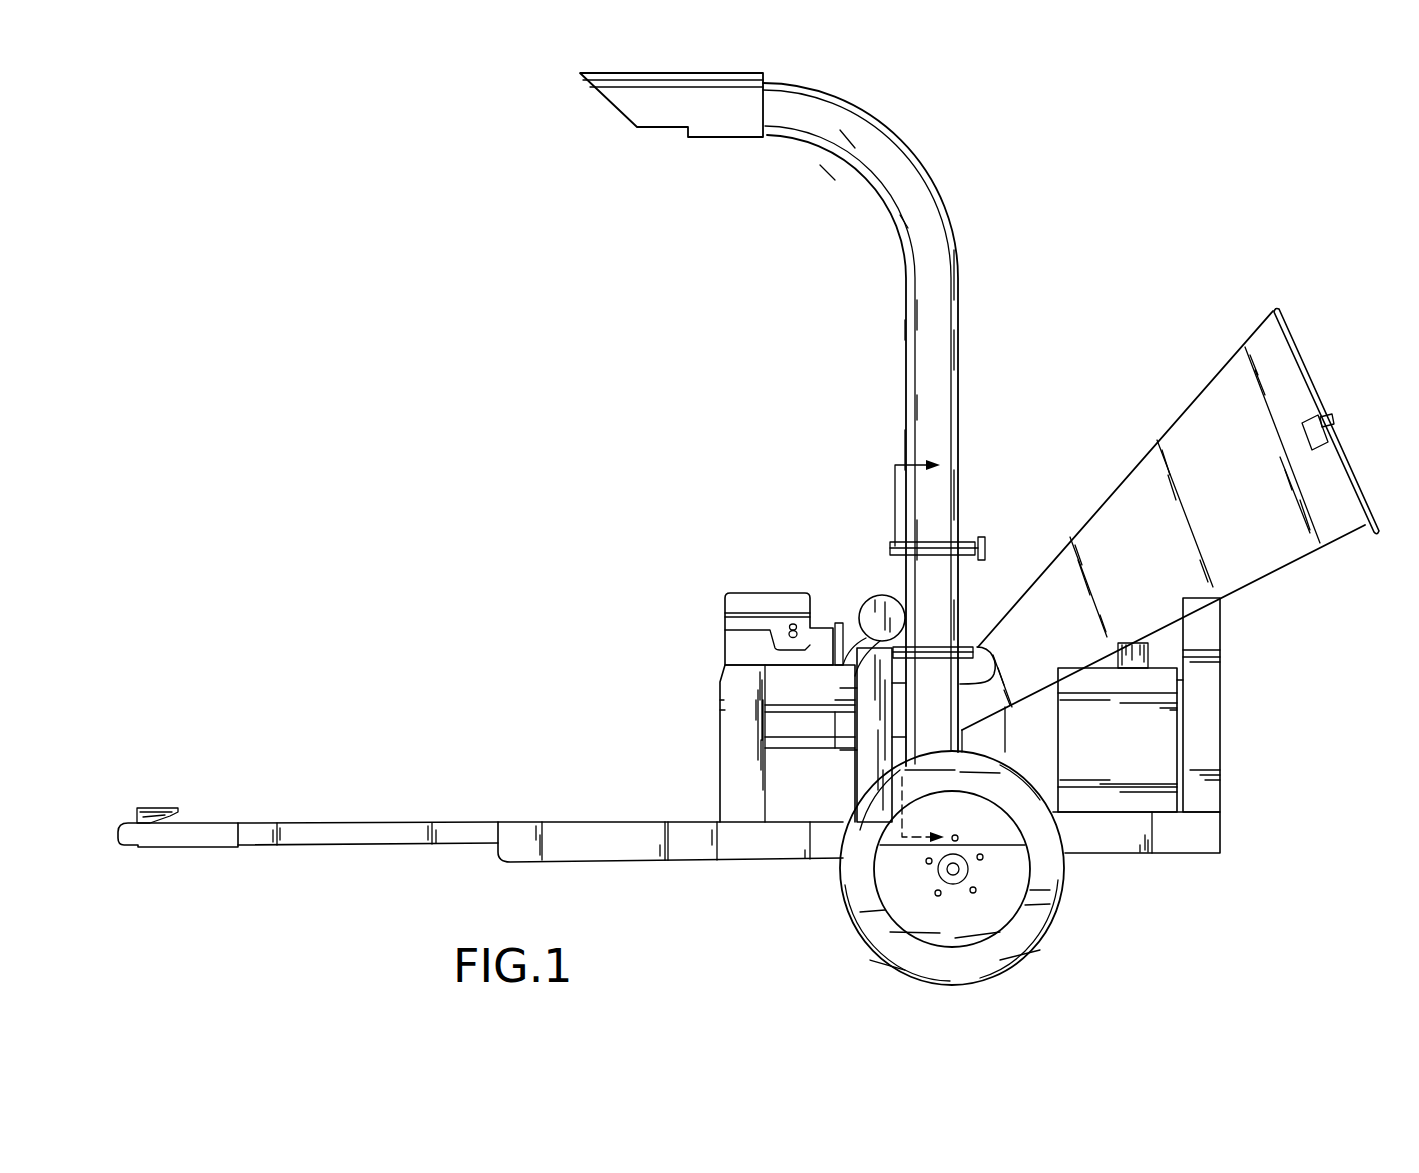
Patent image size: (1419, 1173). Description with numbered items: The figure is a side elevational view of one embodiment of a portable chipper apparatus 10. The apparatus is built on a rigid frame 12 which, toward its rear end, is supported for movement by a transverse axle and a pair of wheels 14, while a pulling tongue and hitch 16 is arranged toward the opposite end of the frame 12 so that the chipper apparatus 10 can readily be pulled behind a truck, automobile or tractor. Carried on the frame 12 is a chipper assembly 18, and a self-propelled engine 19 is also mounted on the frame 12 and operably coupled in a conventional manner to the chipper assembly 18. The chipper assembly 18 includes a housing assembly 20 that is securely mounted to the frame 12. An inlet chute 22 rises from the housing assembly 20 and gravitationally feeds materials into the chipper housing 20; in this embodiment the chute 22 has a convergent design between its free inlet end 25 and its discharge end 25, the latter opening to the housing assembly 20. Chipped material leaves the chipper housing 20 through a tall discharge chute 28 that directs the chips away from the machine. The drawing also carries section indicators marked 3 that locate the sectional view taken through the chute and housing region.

The portable chipper apparatus 10 is at (607, 610).
The rigid frame 12 is at (636, 856).
The wheels 14 is at (1027, 937).
The pulling tongue and hitch 16 is at (207, 830).
The chipper assembly 18 is at (843, 777).
The self-propelled engine 19 is at (742, 643).
The housing assembly 20 is at (830, 759).
The inlet chute 22 is at (1180, 546).
The free inlet end and discharge end 25 is at (1287, 332).
The discharge chute 28 is at (937, 335).
The section line 3- 3 is at (910, 654).